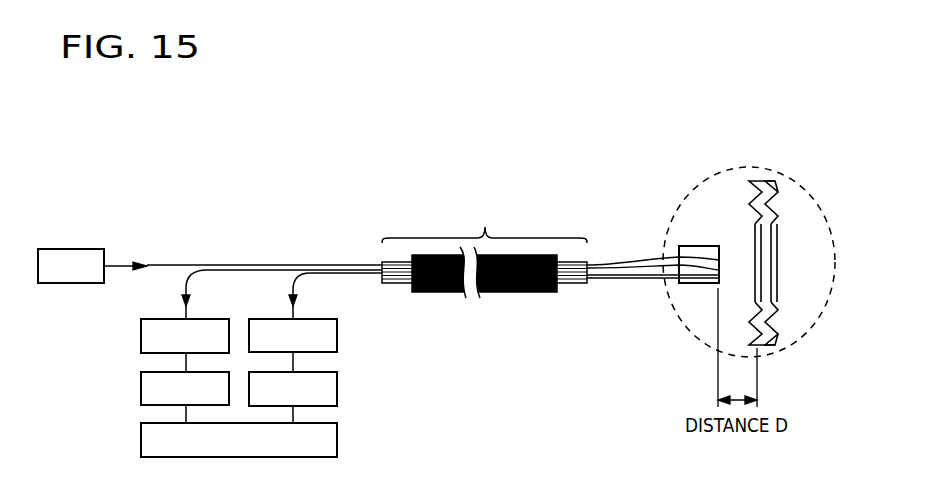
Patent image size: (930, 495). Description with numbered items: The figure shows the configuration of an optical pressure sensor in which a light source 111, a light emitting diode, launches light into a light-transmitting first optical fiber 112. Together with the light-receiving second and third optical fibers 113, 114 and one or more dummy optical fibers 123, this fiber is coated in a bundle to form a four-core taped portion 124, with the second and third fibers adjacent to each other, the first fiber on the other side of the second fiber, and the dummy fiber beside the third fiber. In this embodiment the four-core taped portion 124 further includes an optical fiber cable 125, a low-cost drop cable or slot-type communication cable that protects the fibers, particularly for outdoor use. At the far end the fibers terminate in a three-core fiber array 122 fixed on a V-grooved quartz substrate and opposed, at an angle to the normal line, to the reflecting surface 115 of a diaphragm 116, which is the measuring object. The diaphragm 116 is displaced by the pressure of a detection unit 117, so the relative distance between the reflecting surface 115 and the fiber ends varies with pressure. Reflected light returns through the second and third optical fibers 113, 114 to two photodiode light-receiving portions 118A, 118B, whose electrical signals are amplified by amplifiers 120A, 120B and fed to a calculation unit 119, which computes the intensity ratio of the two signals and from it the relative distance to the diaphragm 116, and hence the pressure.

The light source 111 is at (73, 249).
The light-transmitting first optical fiber 112 is at (158, 264).
The light-receiving second optical fiber 113 is at (239, 268).
The light-receiving third optical fiber 114 is at (314, 274).
The reflecting surface 115 is at (753, 240).
The diaphragm 116 is at (777, 223).
The detection unit 117 is at (780, 350).
The light-receiving portion 118A is at (141, 338).
The light-receiving portion 118B is at (265, 318).
The calculation unit 119 is at (141, 441).
The amplifier 120A is at (141, 384).
The amplifier 120B is at (337, 388).
The 3-core fiber array 122 is at (690, 245).
The dummy optical fiber 123 is at (363, 280).
The 4-core taped portion 124 is at (485, 227).
The optical fiber cable 125 is at (517, 292).